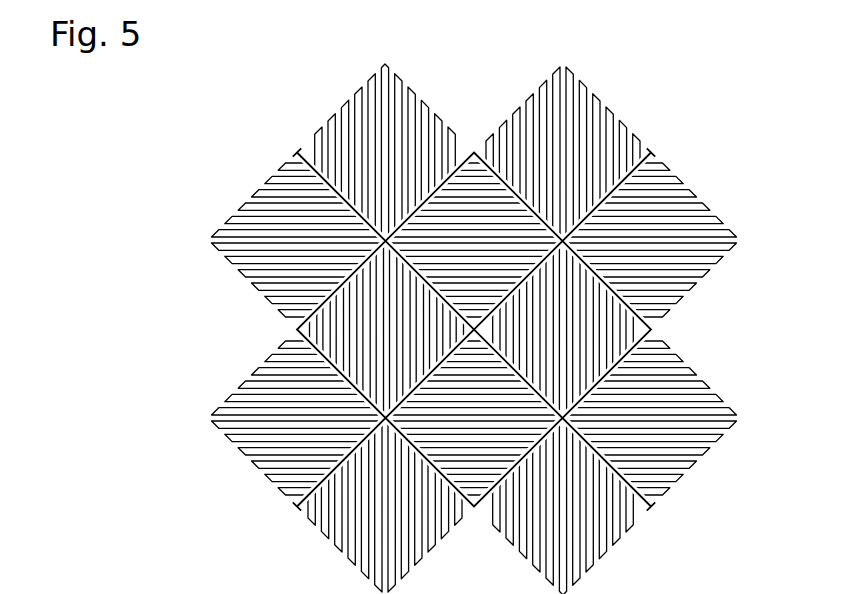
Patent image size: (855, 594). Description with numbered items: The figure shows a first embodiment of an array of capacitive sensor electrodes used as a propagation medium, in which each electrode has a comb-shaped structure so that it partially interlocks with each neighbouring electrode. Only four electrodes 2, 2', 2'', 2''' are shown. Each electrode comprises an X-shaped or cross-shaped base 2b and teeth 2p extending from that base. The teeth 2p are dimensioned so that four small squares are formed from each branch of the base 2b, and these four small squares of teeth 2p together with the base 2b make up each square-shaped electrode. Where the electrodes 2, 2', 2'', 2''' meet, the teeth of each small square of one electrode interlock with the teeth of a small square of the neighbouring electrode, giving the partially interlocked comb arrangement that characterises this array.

The electrode 2 is at (340, 152).
The electrode 2' is at (343, 506).
The electrode 2'' is at (598, 506).
The electrode 2''' is at (587, 152).
The teeth 2p is at (676, 178).
The X-shaped base 2b is at (688, 292).